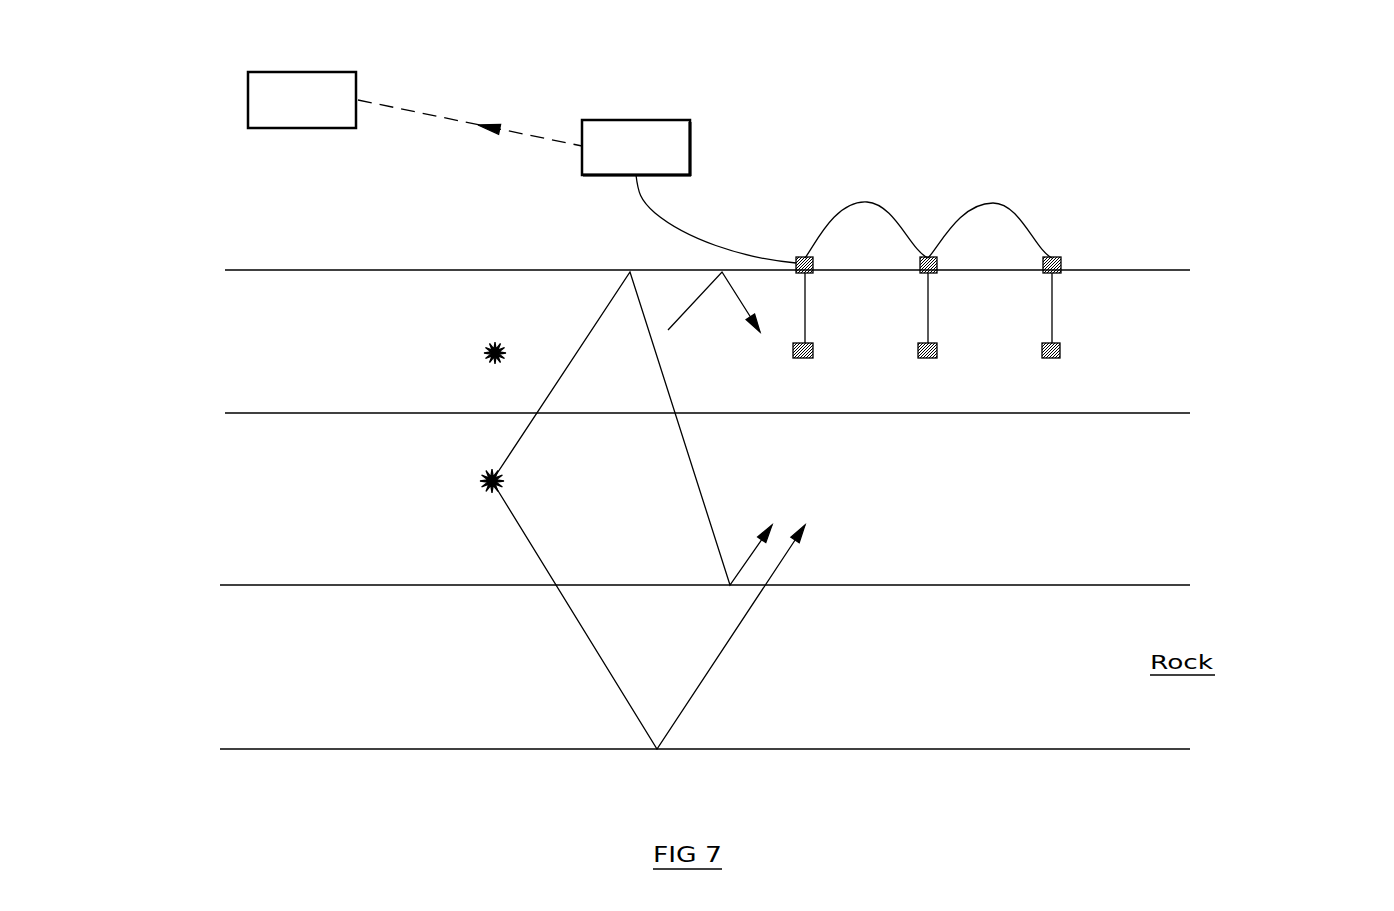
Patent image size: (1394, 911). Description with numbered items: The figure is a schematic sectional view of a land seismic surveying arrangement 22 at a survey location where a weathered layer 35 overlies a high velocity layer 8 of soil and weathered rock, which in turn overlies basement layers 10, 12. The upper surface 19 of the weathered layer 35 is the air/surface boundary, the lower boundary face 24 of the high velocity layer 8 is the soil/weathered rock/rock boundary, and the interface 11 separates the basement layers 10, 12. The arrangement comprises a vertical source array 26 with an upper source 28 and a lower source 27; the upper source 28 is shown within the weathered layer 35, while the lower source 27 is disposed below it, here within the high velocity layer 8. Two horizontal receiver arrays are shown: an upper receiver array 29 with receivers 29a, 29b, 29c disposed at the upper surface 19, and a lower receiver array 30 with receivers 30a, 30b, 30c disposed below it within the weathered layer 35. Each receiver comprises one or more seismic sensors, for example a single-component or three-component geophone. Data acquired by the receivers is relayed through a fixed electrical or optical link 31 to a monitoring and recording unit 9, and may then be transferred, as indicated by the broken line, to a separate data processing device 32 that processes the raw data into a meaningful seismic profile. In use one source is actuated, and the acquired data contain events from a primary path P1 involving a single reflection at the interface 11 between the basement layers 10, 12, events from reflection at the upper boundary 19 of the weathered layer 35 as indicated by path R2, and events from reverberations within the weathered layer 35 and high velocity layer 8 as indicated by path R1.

The data processing device 32 is at (356, 72).
The monitoring and recording unit 9 is at (636, 148).
The fixed electrical or optical link 31 is at (642, 200).
The upper receiver array 29 is at (1080, 140).
The receiver 29a is at (805, 257).
The receiver 29b is at (928, 257).
The receiver 29c is at (1052, 257).
The lower receiver array 30 is at (1078, 355).
The receiver 30a is at (858, 330).
The receiver 30b is at (982, 330).
The receiver 30c is at (1106, 330).
The seismic surveying arrangement 22 is at (1272, 185).
The upper surface of the weathered layer 19 is at (325, 270).
The weathered layer 35 is at (795, 373).
The high velocity layer 8 is at (1269, 510).
The lower boundary face of the high velocity layer 24 is at (250, 585).
The interface between the basement layers 11 is at (250, 749).
The basement layer 10 is at (1005, 710).
The basement layer 12 is at (1010, 809).
The vertical source array 26 is at (137, 295).
The upper source 28 is at (324, 353).
The lower source 27 is at (323, 498).
The reverberation path R1 is at (690, 457).
The reflection path at the upper boundary R2 is at (688, 310).
The primary path P1 is at (732, 640).